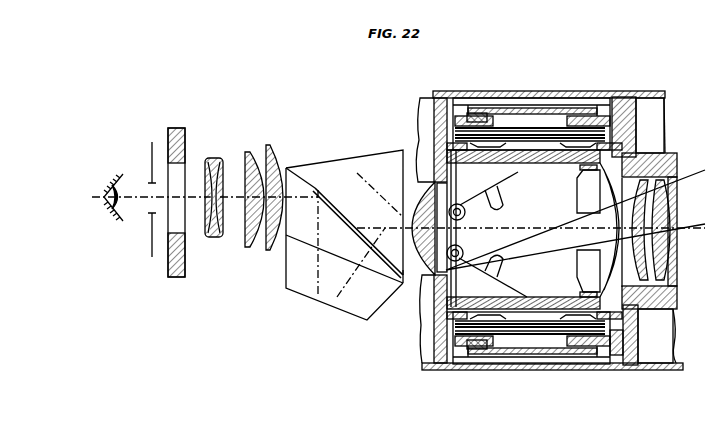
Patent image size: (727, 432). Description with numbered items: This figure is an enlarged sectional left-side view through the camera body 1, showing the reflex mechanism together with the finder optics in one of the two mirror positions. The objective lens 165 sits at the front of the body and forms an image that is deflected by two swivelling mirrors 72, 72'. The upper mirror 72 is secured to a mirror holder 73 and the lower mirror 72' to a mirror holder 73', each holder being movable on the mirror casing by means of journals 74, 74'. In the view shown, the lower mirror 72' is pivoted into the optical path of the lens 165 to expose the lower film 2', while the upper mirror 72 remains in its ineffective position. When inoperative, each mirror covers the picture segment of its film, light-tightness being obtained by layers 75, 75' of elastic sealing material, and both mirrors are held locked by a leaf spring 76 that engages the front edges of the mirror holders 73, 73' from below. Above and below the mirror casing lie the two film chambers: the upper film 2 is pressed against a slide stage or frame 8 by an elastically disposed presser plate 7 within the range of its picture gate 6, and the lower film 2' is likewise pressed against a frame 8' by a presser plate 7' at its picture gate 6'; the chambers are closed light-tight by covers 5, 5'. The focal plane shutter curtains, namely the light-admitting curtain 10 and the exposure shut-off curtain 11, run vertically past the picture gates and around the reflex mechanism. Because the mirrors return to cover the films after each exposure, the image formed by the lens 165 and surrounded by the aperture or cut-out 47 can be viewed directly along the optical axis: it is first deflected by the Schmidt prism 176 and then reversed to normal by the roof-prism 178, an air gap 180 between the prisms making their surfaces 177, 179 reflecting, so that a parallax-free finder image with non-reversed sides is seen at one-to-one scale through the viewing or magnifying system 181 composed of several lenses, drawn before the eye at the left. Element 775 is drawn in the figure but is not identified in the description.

The viewing or magnifying system 181 is at (266, 146).
The air gap 180 is at (315, 188).
The reflecting surface of Schmidt prism 177 is at (335, 207).
The Schmidt prism 176 is at (382, 178).
The reflecting surface of roof-prism 179 is at (286, 238).
The roof-prism 178 is at (337, 297).
The aperture or cut-out 47 is at (410, 278).
The lens 775 is at (426, 185).
The swivelling mirror 72 is at (476, 94).
The slide stage or frame 8 is at (532, 90).
The presser plate 7 is at (530, 97).
The light-admitting curtain 10 is at (527, 140).
The film 2 is at (530, 98).
The picture gate 6 is at (530, 102).
The exposure shut-off curtain 11 is at (590, 110).
The cover 5 is at (540, 96).
The sealing layer 75 is at (631, 111).
The camera body 1 is at (640, 150).
The leaf spring 76 is at (636, 155).
The objective lens 165 is at (650, 217).
The mirror holder 73 is at (499, 191).
The journal 74 is at (473, 215).
The journal 74' is at (432, 288).
The mirror holder 73' is at (466, 303).
The swivelling mirror 72' is at (463, 368).
The slide stage or frame 8' is at (532, 372).
The presser plate 7' is at (530, 365).
The film 2' is at (530, 363).
The picture gate 6' is at (530, 360).
The cover 5' is at (534, 366).
The sealing layer 75' is at (640, 350).